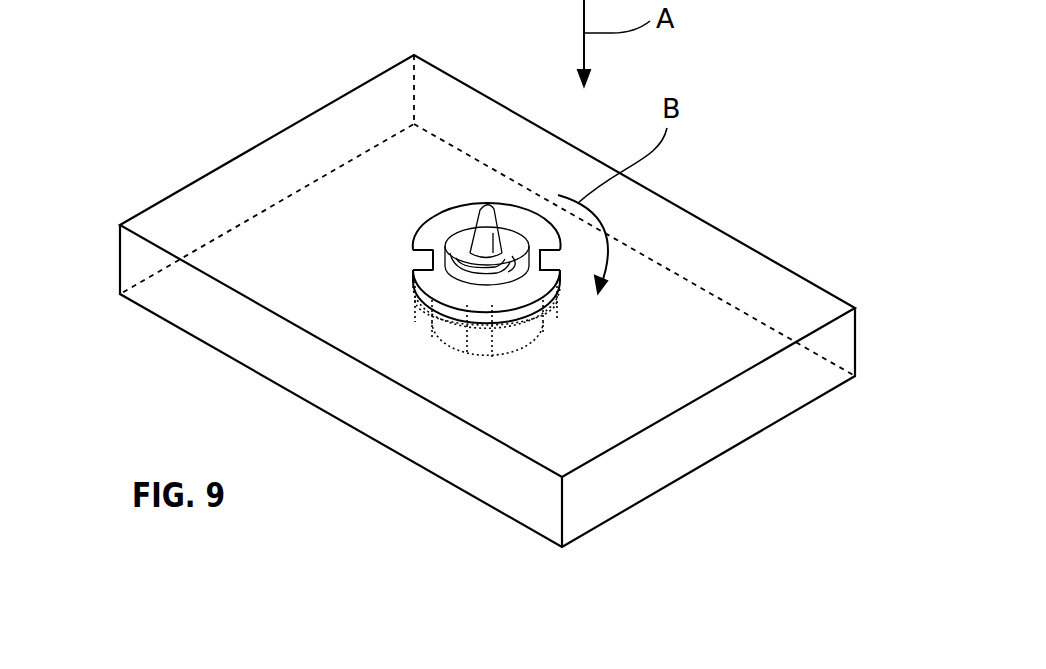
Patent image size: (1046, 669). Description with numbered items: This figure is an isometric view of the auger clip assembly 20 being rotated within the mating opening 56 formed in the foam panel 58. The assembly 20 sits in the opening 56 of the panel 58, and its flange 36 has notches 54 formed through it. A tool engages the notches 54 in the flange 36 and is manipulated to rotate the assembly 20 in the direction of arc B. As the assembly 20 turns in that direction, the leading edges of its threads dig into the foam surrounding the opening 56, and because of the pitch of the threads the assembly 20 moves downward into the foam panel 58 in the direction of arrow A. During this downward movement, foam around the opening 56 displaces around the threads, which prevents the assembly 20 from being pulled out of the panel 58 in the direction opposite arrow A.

The auger clip assembly 20 is at (452, 227).
The flange 36 is at (437, 232).
The notches 54 is at (163, 228).
The mating opening 56 is at (520, 296).
The foam panel 58 is at (313, 382).